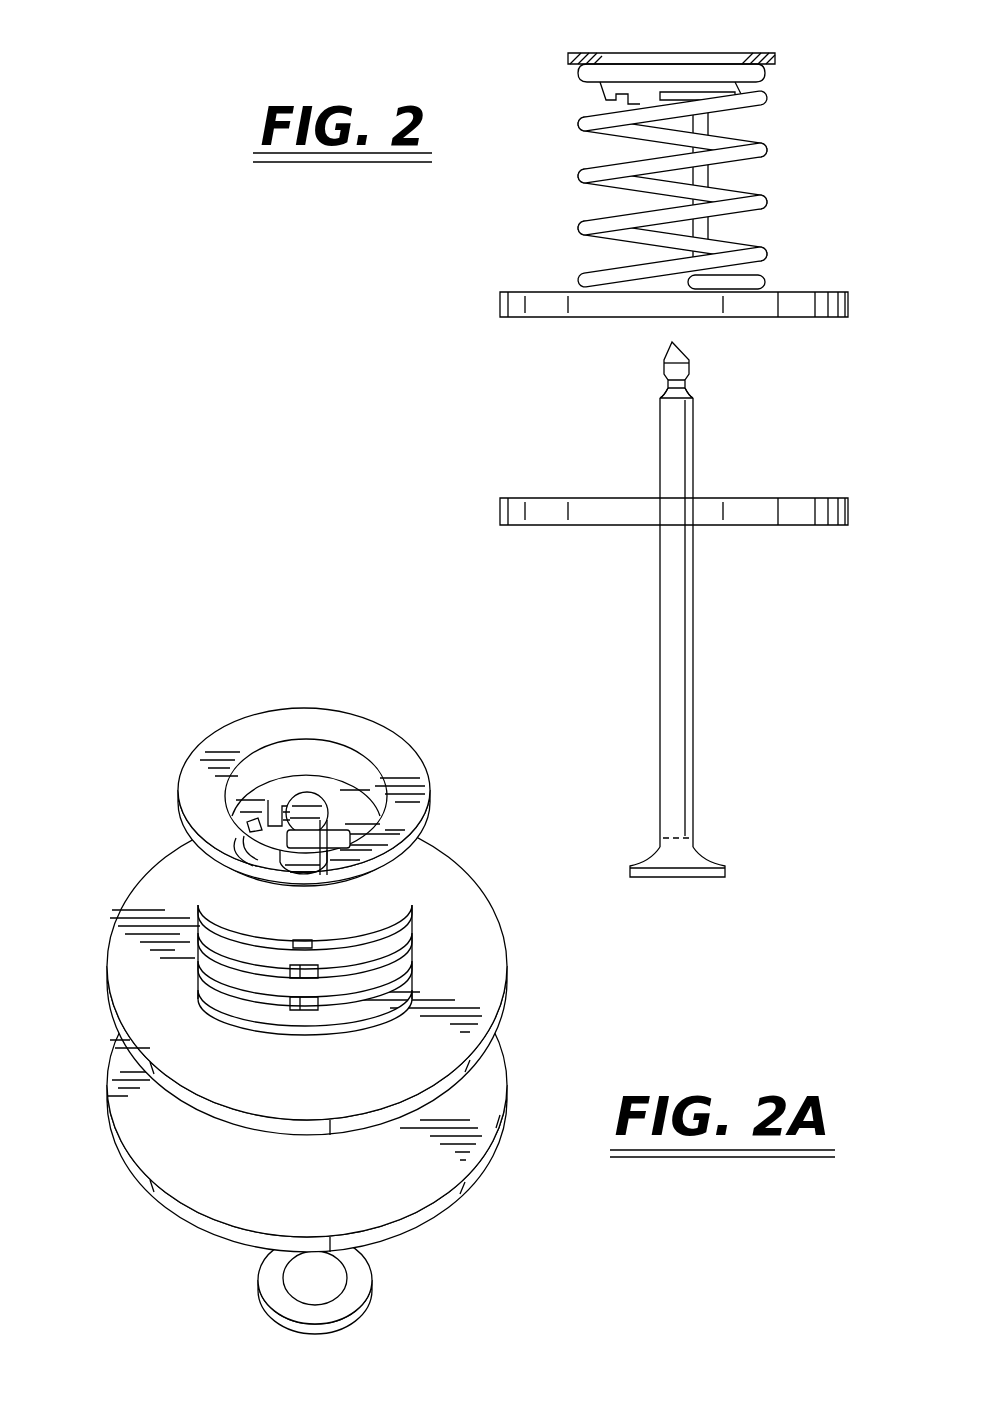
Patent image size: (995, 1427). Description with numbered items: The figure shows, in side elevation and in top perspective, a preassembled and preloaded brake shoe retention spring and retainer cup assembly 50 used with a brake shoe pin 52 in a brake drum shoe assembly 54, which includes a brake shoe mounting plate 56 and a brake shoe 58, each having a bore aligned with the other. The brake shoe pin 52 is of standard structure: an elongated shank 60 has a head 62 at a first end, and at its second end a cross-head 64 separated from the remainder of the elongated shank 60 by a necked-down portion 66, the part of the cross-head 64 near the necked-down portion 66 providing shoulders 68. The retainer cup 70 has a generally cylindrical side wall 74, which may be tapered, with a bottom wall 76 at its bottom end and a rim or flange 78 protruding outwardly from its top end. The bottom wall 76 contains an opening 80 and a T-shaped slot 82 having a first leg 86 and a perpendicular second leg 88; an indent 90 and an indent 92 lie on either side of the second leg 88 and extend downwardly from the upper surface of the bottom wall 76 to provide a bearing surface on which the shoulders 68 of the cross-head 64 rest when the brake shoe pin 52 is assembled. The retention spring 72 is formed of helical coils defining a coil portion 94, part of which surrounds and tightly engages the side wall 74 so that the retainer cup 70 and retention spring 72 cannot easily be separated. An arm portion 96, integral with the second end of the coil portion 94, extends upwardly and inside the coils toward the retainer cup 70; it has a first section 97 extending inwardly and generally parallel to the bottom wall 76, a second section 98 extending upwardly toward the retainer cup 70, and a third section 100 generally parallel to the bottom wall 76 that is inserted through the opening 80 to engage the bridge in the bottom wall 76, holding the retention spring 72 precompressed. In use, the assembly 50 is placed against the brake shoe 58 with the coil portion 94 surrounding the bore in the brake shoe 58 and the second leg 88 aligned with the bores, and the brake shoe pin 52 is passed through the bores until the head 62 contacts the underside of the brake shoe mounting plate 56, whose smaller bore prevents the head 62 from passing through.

In FIG. 2, the preloaded brake shoe retention spring and retainer cup assembly 50 is at (684, 183).
In FIG. 2A, the preloaded brake shoe retention spring and retainer cup assembly 50 is at (288, 888).
In FIG. 2, the brake shoe pin 52 is at (682, 629).
In FIG. 2A, the brake shoe pin 52 is at (318, 1285).
In FIG. 2, the brake drum shoe assembly 54 is at (674, 629).
In FIG. 2A, the brake drum shoe assembly 54 is at (336, 1133).
In FIG. 2, the brake shoe mounting plate 56 is at (746, 498).
In FIG. 2A, the brake shoe mounting plate 56 is at (440, 1172).
In FIG. 2, the brake shoe 58 is at (809, 311).
In FIG. 2A, the brake shoe 58 is at (146, 890).
In FIG. 2, the elongated shank 60 is at (666, 611).
In FIG. 2, the head 62 is at (692, 869).
In FIG. 2A, the head 62 is at (262, 1306).
In FIG. 2, the cross-head 64 is at (683, 357).
In FIG. 2, the necked-down portion 66 is at (660, 391).
In FIG. 2, the shoulders 68 is at (659, 383).
In FIG. 2, the retainer cup 70 is at (674, 53).
In FIG. 2A, the retainer cup 70 is at (312, 788).
In FIG. 2, the retention spring 72 is at (664, 190).
In FIG. 2A, the retention spring 72 is at (412, 926).
In FIG. 2, the side wall 74 is at (638, 84).
In FIG. 2A, the side wall 74 is at (266, 760).
In FIG. 2A, the bottom wall 76 is at (364, 805).
In FIG. 2, the flange 78 is at (591, 53).
In FIG. 2A, the flange 78 is at (204, 778).
In FIG. 2A, the opening 80 is at (340, 843).
In FIG. 2A, the slot 82 is at (246, 817).
In FIG. 2A, the first leg 86 is at (262, 872).
In FIG. 2A, the second leg 88 is at (298, 822).
In FIG. 2A, the indent 90 is at (306, 808).
In FIG. 2A, the indent 92 is at (304, 860).
In FIG. 2, the coil portion 94 is at (762, 203).
In FIG. 2, the arm portion 96 is at (718, 178).
In FIG. 2, the first section 97 is at (750, 281).
In FIG. 2, the second section 98 is at (722, 124).
In FIG. 2A, the third section 100 is at (337, 860).